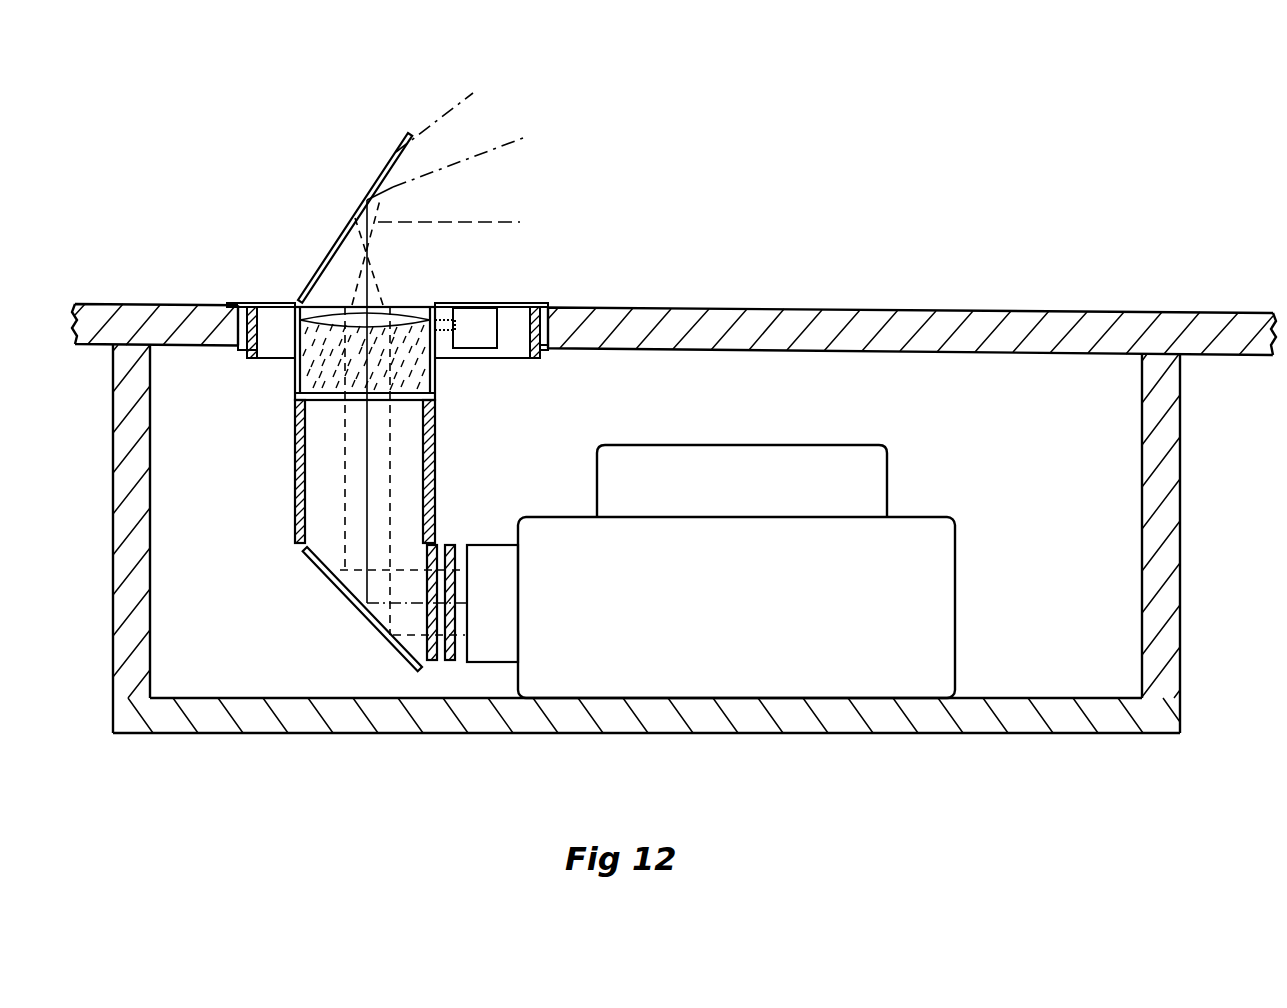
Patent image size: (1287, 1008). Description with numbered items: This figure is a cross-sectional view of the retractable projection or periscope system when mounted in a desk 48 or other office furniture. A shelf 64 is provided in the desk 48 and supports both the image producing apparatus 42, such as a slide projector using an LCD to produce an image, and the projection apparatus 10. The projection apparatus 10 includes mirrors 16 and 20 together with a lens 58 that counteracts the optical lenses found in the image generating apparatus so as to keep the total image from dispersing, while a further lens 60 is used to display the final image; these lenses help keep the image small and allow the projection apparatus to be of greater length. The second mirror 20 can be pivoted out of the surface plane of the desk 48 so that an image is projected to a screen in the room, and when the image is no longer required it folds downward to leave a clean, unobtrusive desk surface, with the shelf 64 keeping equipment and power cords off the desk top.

The mirror 20 is at (379, 173).
The lens 60 is at (333, 305).
The desk 48 is at (980, 320).
The apparatus 10 is at (440, 470).
The lens 58 is at (455, 568).
The image producing apparatus 42 is at (937, 612).
The mirror 16 is at (357, 598).
The shelf 64 is at (1035, 728).